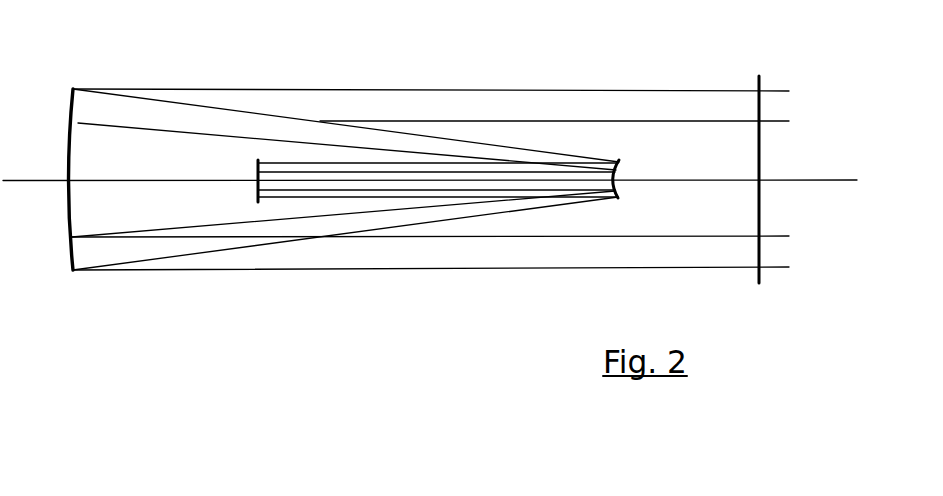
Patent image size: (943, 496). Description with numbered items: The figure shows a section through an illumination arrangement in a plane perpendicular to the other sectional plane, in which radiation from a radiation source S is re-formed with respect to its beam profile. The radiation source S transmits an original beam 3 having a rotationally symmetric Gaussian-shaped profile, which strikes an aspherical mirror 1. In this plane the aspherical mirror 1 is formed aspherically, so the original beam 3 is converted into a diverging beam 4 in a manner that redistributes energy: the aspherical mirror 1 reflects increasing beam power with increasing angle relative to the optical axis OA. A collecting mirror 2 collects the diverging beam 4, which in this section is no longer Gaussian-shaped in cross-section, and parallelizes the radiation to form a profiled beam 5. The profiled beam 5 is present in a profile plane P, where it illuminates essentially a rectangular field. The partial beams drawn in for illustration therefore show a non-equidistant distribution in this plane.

The aspherical mirror 1 is at (623, 168).
The collecting mirror 2 is at (69, 113).
The original beam 3 is at (278, 199).
The diverging beam 4 is at (220, 108).
The profiled beam 5 is at (533, 90).
The radiation source S is at (257, 170).
The profile plane P is at (759, 80).
The optical axis OA is at (817, 179).